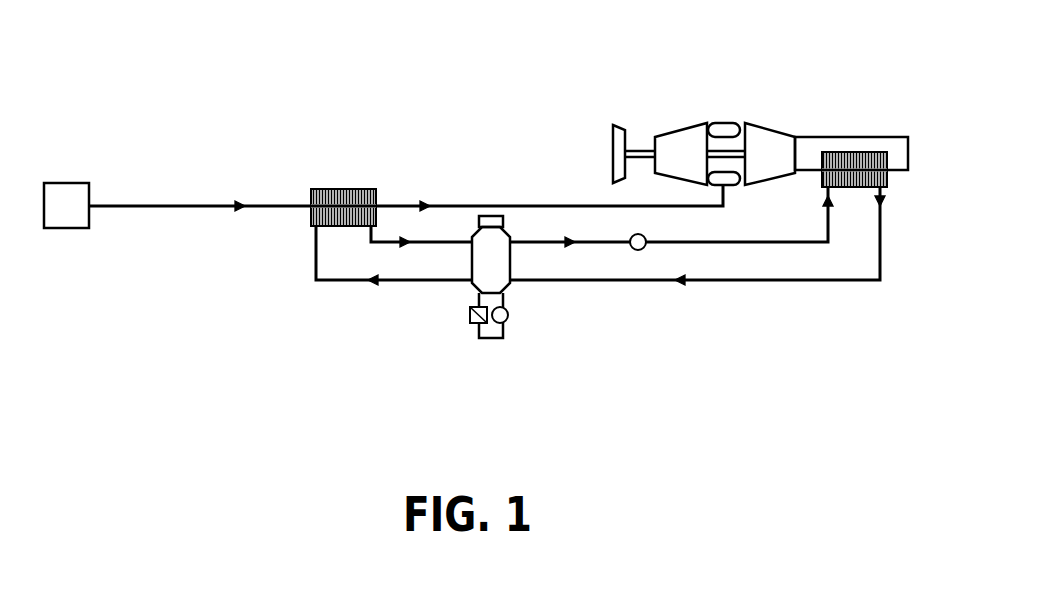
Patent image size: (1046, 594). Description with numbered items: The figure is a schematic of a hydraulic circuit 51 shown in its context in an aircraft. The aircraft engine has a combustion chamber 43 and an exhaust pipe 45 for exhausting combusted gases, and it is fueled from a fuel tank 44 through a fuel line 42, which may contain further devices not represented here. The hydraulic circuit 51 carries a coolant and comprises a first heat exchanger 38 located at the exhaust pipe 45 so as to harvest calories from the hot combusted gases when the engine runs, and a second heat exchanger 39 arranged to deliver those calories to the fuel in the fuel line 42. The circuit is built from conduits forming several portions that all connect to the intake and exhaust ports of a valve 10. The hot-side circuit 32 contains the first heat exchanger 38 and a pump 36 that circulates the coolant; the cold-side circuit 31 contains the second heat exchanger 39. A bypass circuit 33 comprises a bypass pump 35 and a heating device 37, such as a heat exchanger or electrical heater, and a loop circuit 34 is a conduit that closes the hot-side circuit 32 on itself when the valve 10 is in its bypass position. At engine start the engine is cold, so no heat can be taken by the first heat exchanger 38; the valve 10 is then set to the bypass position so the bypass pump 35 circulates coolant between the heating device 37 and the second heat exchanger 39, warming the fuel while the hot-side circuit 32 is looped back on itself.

The valve 10 is at (503, 262).
The cold-side circuit 31 is at (313, 260).
The hot-side circuit 32 is at (882, 255).
The bypass circuit 33 is at (503, 335).
The loop circuit 34 is at (503, 222).
The bypass pump 35 is at (508, 318).
The pump 36 is at (642, 250).
The heating device 37 is at (470, 312).
The first heat exchanger 38 is at (887, 178).
The second heat exchanger 39 is at (365, 189).
The fuel line 42 is at (262, 209).
The combustion chamber 43 is at (728, 122).
The fuel tank 44 is at (66, 190).
The exhaust pipe 45 is at (855, 137).
The hydraulic circuit 51 is at (736, 298).